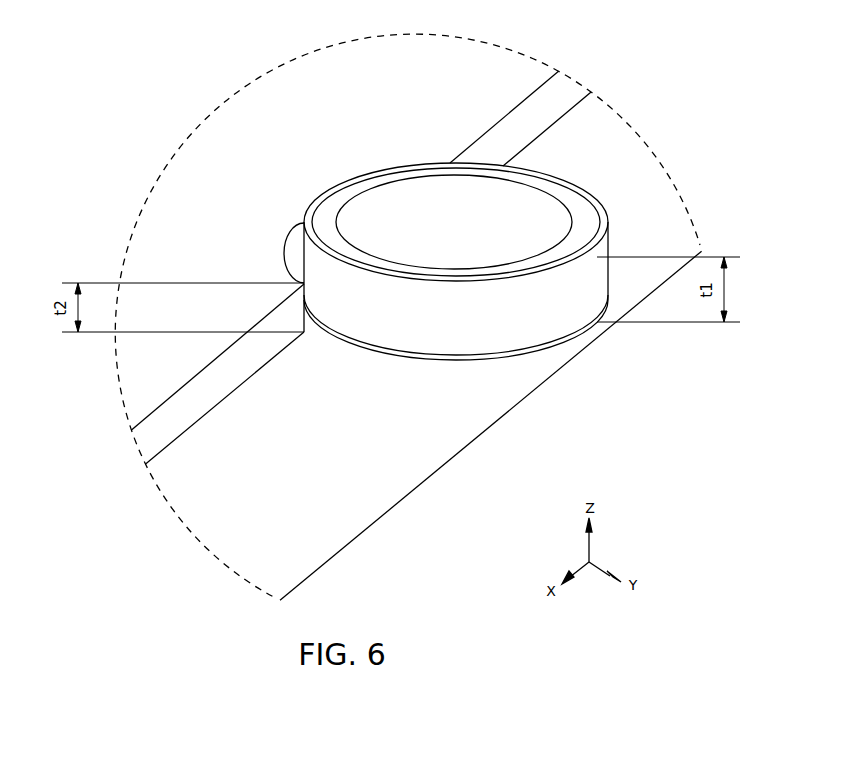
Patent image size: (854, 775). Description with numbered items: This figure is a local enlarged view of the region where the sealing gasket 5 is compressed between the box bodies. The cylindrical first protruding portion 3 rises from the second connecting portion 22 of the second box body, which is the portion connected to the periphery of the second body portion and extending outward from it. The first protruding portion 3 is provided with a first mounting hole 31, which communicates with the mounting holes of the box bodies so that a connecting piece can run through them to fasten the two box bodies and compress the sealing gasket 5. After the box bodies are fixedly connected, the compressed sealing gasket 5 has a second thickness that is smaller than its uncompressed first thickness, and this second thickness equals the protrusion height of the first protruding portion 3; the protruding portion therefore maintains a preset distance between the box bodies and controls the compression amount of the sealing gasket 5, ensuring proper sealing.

The sealing gasket 5 is at (497, 62).
The second connecting portion 22 is at (313, 555).
The first protruding portion 3 is at (513, 337).
The first mounting hole 31 is at (522, 198).